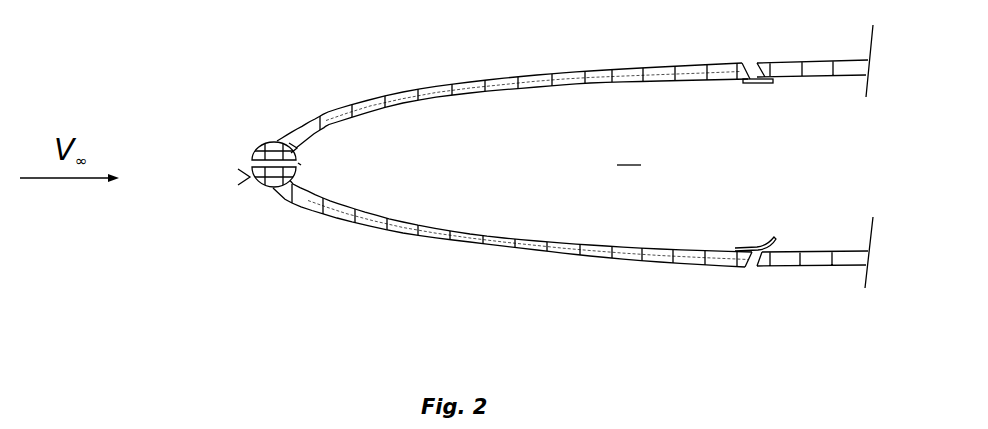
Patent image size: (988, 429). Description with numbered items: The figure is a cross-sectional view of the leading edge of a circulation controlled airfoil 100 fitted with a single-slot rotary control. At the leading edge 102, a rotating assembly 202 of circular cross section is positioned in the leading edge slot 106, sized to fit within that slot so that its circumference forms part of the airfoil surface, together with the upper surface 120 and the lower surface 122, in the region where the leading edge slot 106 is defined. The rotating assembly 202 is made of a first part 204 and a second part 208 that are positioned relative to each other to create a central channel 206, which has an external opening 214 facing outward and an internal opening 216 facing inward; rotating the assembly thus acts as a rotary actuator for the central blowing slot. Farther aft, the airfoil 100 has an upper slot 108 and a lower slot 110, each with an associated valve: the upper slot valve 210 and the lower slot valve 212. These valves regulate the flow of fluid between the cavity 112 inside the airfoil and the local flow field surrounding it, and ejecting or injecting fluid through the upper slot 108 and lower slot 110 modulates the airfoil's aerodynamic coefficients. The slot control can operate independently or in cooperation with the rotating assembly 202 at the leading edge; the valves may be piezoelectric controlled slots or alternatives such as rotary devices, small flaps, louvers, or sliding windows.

The circulation controlled airfoil 100 is at (600, 58).
The leading edge 102 is at (267, 142).
The leading edge slot 106 is at (297, 147).
The upper slot 108 is at (752, 62).
The lower slot 110 is at (751, 266).
The cavity 112 is at (631, 158).
The upper surface 120 is at (513, 74).
The lower surface 122 is at (512, 251).
The rotating assembly 202 is at (250, 177).
The first part 204 is at (297, 148).
The central channel 206 is at (270, 188).
The second part 208 is at (297, 177).
The upper slot valve 210 is at (765, 84).
The lower slot valve 212 is at (765, 239).
The external opening 214 is at (250, 160).
The internal opening 216 is at (300, 165).